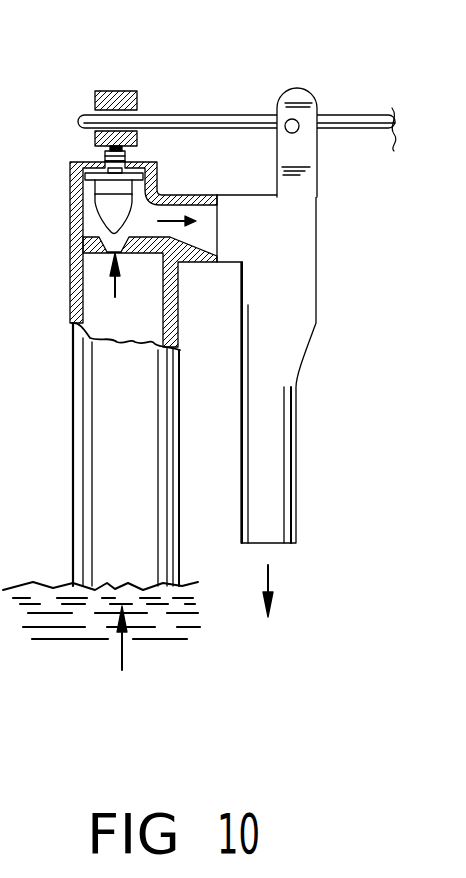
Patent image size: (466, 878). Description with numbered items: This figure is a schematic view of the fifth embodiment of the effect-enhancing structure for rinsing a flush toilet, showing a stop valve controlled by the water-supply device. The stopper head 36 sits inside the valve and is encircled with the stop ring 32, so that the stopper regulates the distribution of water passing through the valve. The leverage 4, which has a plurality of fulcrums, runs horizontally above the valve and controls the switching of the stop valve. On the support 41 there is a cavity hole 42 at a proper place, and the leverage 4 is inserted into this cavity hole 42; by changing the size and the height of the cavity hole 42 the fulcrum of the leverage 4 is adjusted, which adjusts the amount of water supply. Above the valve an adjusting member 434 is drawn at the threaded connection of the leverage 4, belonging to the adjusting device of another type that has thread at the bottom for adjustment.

The leverage 4 is at (215, 117).
The adjusting nut 434 is at (107, 89).
The cavity hole 42 is at (94, 112).
The stop ring 32 is at (69, 166).
The stopper head 36 is at (93, 216).
The support 41 is at (318, 277).